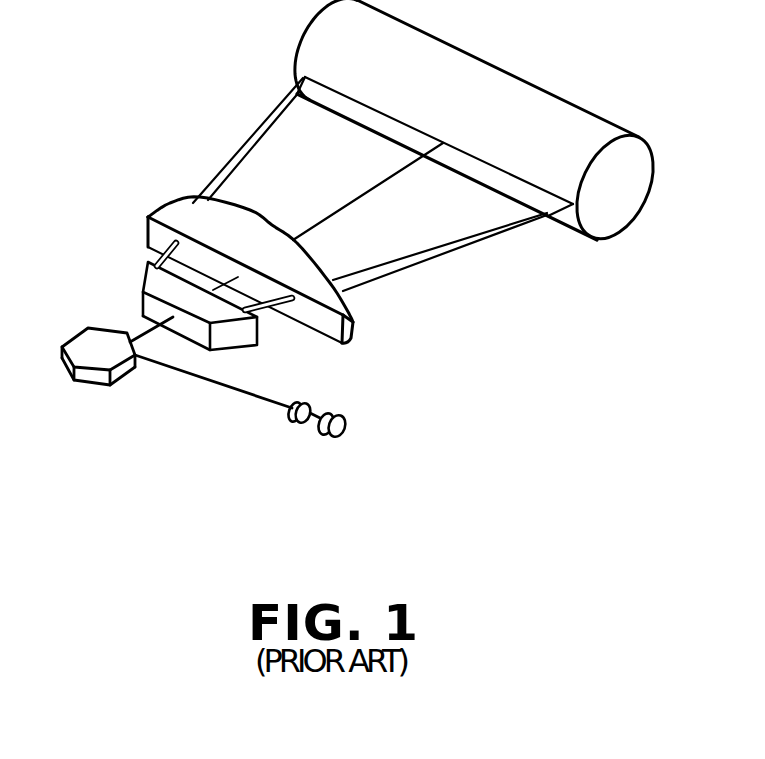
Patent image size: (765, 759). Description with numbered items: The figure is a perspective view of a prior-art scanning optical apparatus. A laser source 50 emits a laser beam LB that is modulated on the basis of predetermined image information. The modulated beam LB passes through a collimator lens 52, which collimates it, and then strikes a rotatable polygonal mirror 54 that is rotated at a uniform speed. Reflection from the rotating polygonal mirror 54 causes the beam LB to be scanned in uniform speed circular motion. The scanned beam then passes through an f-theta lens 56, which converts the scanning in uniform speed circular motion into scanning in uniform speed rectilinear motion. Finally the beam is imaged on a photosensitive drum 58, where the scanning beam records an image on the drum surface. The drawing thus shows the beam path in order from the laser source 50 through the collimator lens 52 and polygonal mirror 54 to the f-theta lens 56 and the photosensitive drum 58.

The laser source 50 is at (333, 439).
The collimator lens 52 is at (293, 423).
The rotatable polygonal mirror 54 is at (78, 348).
The f-theta lens 56 is at (218, 255).
The photosensitive drum 58 is at (623, 218).
The laser beam LB is at (190, 376).